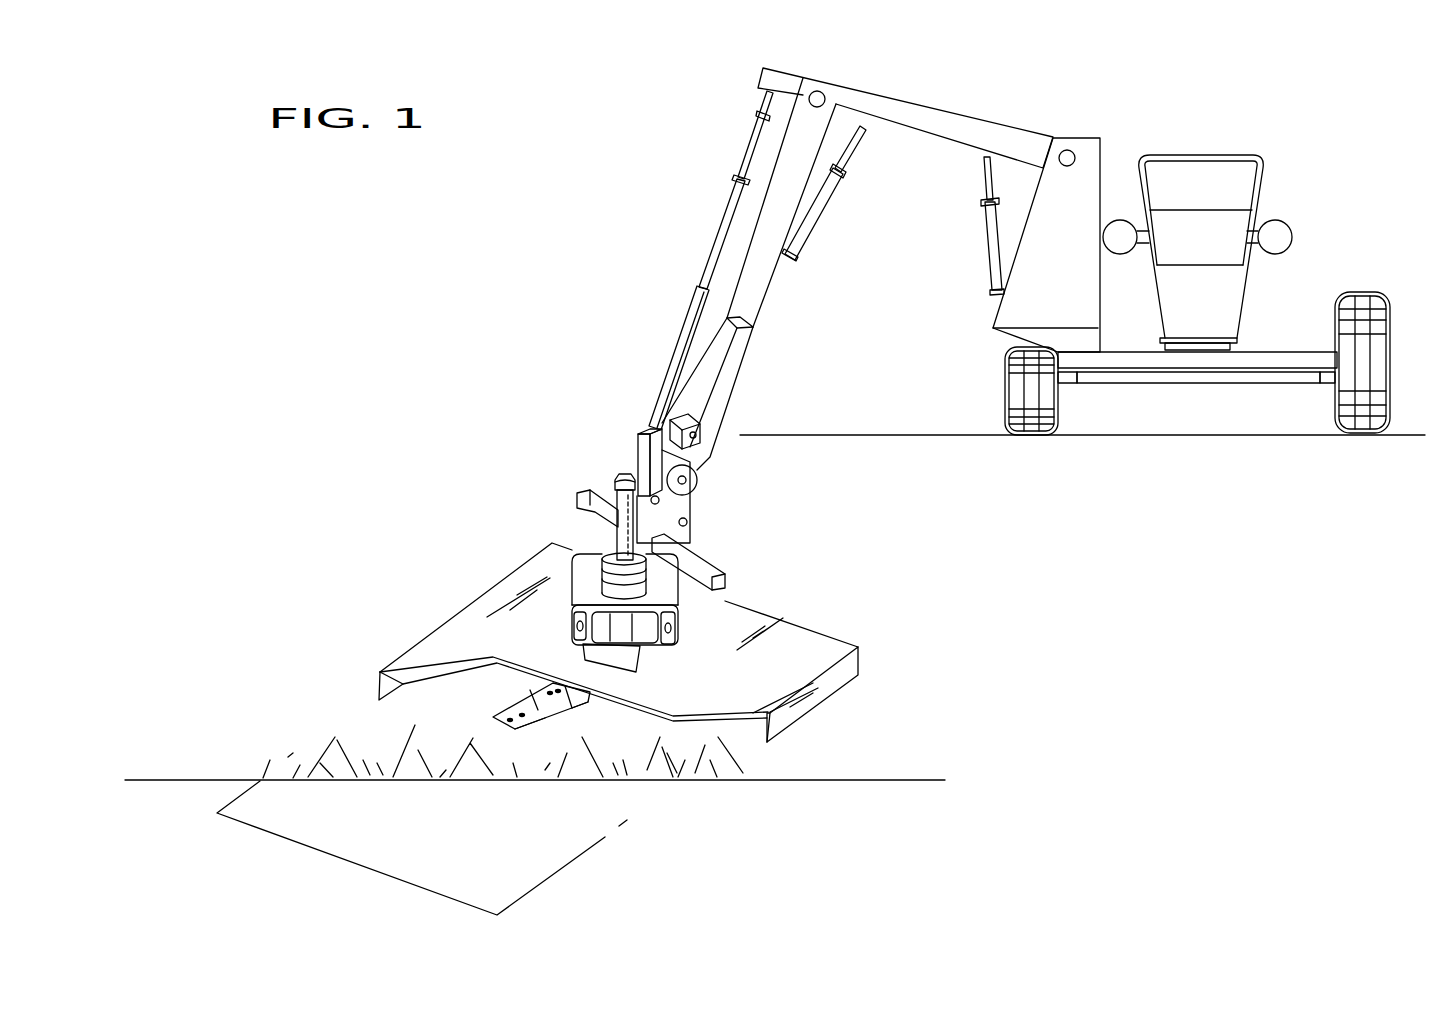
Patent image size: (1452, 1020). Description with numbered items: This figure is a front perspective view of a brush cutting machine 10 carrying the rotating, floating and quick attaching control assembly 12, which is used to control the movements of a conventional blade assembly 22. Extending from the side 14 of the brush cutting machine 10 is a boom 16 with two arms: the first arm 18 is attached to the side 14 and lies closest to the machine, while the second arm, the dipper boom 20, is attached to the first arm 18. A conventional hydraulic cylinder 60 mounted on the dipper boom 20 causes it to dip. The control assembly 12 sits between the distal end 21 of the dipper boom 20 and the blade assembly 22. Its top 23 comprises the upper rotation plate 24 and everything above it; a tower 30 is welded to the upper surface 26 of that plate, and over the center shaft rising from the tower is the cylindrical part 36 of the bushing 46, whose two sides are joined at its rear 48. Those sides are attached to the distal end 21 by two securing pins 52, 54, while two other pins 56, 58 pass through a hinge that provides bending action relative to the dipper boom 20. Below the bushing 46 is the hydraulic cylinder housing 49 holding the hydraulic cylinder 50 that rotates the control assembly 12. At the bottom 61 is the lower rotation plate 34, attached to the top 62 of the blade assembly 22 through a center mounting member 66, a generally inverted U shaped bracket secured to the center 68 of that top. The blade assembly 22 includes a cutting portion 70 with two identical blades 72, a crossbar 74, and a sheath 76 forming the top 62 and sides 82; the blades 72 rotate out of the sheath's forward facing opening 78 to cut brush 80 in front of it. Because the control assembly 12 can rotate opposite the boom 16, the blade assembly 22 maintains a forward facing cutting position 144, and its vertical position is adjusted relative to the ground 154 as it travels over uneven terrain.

The brush cutting machine 10 is at (1197, 138).
The control assembly 12 is at (663, 475).
The side of the brush cutting machine 14 is at (1242, 302).
The boom 16 is at (940, 100).
The first arm 18 is at (1010, 126).
The dipper boom 20 is at (735, 363).
The distal end of the dipper boom 21 is at (700, 454).
The blade assembly 22 is at (675, 687).
The top of the control assembly 23 is at (620, 466).
The upper rotation plate 24 is at (590, 590).
The upper surface of the upper rotation plate 26 is at (583, 582).
The tower 30 is at (570, 560).
The lower rotation plate 34 is at (643, 652).
The cylindrical part of the bushing 36 is at (620, 505).
The bushing 46 is at (690, 543).
The rear of the bushing 48 is at (690, 493).
The hydraulic cylinder housing 49 is at (728, 575).
The hydraulic cylinder 50 is at (590, 525).
The securing pin 52 is at (698, 483).
The securing pin 54 is at (660, 438).
The hinge pin 56 is at (697, 436).
The hinge pin 58 is at (690, 524).
The hydraulic cylinder 60 is at (694, 310).
The bottom of the control assembly 61 is at (551, 637).
The top of the blade assembly 62 is at (838, 647).
The center mounting member 66 is at (625, 662).
The center of the top of the blade assembly 68 is at (643, 645).
The blade or cutting portion 70 is at (528, 744).
The blades 72 is at (500, 713).
The crossbar 74 is at (577, 708).
The sheath 76 is at (878, 677).
The forward facing opening 78 is at (751, 742).
The brush 80 is at (394, 767).
The sides of the blade assembly 82 is at (818, 697).
The forward facing cutting position 144 is at (327, 862).
The ground 154 is at (877, 781).